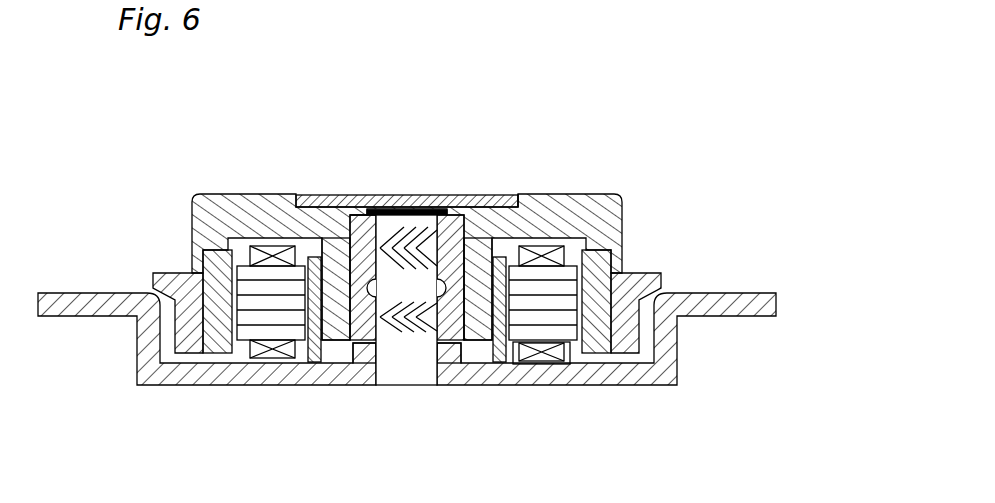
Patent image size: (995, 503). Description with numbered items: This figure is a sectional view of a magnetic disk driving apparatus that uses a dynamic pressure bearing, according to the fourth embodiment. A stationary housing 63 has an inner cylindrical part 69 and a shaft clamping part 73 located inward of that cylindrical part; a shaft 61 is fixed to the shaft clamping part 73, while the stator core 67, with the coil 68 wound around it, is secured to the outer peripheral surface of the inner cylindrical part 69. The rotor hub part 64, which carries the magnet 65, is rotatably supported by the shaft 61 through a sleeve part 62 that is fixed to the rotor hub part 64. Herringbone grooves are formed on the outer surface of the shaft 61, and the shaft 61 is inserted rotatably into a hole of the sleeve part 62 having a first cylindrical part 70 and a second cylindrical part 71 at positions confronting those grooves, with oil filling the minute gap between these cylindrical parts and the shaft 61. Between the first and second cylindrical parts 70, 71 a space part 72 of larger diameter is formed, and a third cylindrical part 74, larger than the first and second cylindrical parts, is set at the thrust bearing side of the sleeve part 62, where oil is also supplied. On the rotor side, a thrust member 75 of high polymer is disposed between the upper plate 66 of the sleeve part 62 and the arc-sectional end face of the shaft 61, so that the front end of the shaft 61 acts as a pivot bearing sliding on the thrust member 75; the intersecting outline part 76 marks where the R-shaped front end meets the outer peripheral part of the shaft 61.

The shaft 61 is at (420, 370).
The sleeve part 62 is at (507, 194).
The housing 63 is at (615, 377).
The rotor hub part 64 is at (627, 197).
The magnet 65 is at (638, 358).
The upper plate 66 is at (516, 197).
The stator core 67 is at (548, 325).
The coil 68 is at (545, 348).
The inner cylindrical part 69 is at (267, 358).
The first cylindrical part 70 is at (350, 315).
The second cylindrical part 71 is at (368, 293).
The space part 72 is at (340, 256).
The shaft clamping part 73 is at (373, 343).
The third cylindrical part 74 is at (451, 218).
The thrust member 75 is at (413, 210).
The intersecting outline part 76 is at (355, 213).